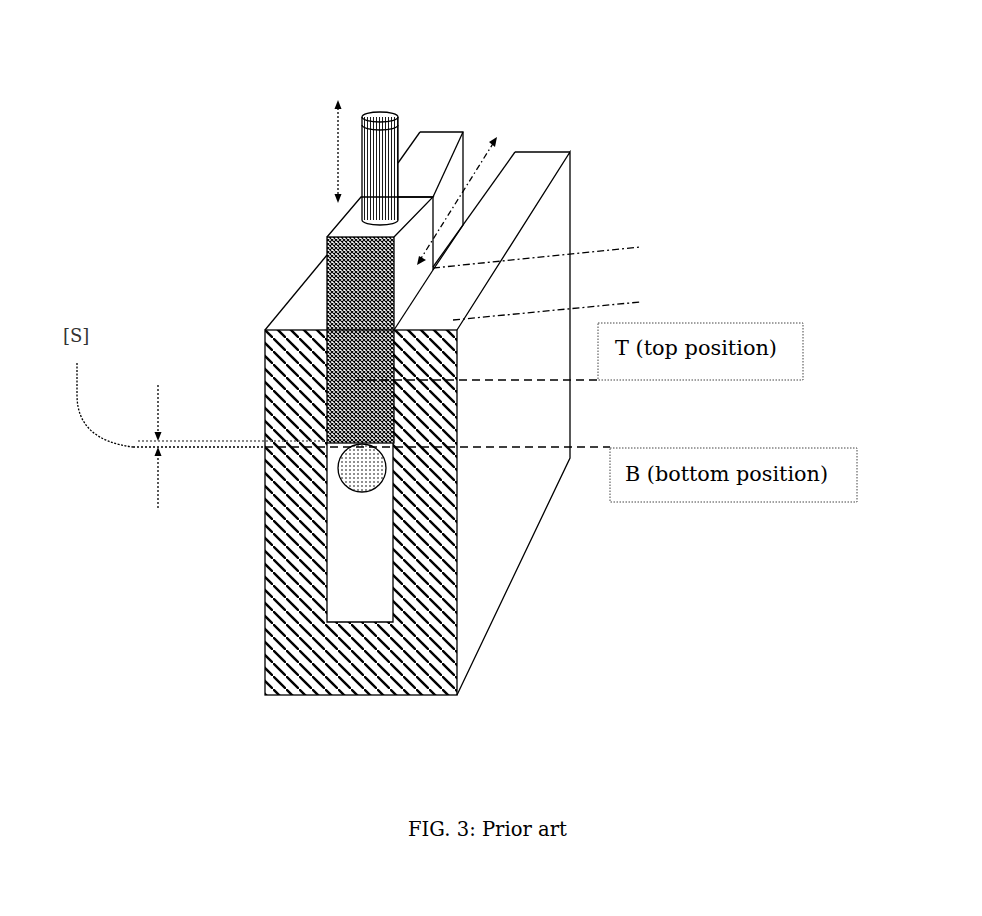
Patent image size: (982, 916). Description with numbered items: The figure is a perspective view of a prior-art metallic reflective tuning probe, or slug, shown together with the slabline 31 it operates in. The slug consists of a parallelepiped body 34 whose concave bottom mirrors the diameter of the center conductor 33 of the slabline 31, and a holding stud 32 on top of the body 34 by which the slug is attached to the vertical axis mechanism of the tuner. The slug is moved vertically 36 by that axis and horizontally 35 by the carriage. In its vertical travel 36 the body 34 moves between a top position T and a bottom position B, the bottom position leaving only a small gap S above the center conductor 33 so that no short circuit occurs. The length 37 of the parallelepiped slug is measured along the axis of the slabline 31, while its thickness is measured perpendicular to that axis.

The slabline 31 is at (265, 602).
The holding stud 32 is at (373, 112).
The center conductor 33 is at (327, 622).
The body 34 is at (327, 283).
The horizontal movement 35 is at (477, 170).
The vertical movement 36 is at (338, 167).
The length 37 is at (582, 307).